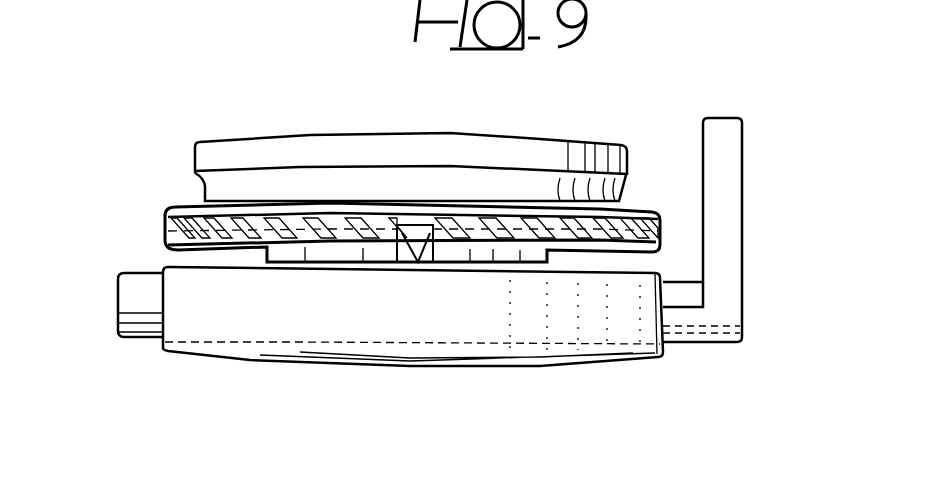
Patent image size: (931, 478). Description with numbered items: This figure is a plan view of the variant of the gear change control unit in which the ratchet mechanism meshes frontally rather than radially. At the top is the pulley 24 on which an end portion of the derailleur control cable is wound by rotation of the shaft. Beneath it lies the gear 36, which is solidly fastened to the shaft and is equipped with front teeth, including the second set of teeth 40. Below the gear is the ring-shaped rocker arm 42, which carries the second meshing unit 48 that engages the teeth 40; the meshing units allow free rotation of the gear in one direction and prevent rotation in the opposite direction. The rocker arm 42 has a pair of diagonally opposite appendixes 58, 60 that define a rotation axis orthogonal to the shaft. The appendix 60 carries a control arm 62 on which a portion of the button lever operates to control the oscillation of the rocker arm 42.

The pulley 24 is at (313, 175).
The gear 36 is at (513, 207).
The second set of teeth 40 is at (583, 210).
The second meshing unit 48 is at (413, 250).
The rocker arm 42 is at (247, 320).
The appendix 58 is at (133, 305).
The appendix 60 is at (678, 318).
The control arm 62 is at (727, 153).